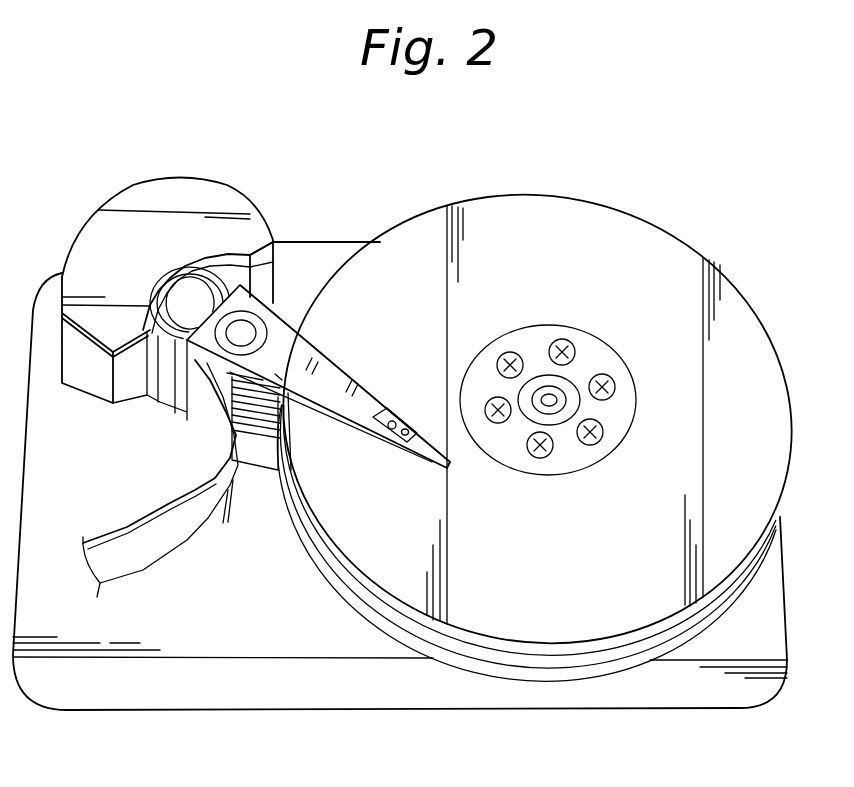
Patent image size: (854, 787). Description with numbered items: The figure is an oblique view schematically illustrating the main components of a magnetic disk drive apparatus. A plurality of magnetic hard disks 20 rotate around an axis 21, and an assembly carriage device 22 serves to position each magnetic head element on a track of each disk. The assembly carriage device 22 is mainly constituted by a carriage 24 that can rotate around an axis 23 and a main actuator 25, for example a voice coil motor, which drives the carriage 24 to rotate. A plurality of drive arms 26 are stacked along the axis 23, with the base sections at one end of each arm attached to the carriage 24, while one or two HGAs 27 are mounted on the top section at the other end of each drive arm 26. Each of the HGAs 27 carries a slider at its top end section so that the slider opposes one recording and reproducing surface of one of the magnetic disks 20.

The magnetic hard disks 20 is at (759, 288).
The axis 21 is at (563, 397).
The assembly carriage device 22 is at (110, 327).
The axis 23 is at (247, 333).
The carriage 24 is at (170, 382).
The main actuator 25 is at (128, 363).
The drive arms 26 is at (310, 370).
The HGAs 27 is at (422, 448).